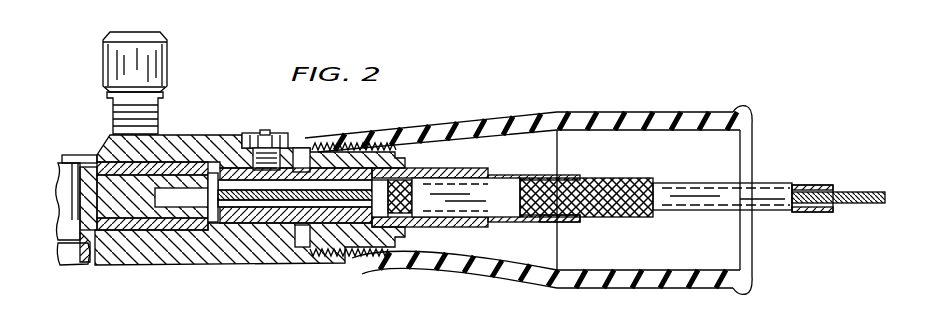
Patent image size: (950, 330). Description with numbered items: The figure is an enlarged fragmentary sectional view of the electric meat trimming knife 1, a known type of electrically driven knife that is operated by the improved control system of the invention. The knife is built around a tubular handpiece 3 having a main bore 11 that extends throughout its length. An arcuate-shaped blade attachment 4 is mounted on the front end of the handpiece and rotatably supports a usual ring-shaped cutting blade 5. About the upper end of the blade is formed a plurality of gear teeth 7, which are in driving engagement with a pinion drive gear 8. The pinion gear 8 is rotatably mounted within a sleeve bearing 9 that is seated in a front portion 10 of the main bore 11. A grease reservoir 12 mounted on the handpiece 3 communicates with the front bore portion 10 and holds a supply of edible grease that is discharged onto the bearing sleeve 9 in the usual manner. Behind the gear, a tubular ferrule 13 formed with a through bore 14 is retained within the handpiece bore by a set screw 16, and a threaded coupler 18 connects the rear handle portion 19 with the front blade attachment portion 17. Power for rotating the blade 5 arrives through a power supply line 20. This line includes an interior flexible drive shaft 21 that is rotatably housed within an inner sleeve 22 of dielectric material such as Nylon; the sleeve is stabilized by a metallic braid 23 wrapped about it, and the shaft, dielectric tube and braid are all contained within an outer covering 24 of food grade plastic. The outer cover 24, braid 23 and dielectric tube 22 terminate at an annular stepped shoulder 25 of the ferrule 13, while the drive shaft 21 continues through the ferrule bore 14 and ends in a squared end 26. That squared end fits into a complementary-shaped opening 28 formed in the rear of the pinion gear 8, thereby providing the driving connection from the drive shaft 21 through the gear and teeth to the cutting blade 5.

The electric meat trimming knife 1 is at (562, 98).
The tubular handpiece 3 is at (653, 104).
The arcuate-shaped blade attachment 4 is at (70, 155).
The ring-shaped cutting blade 5 is at (72, 263).
The gear teeth 7 is at (62, 233).
The pinion drive gear 8 is at (130, 212).
The sleeve bearing 9 is at (182, 160).
The front portion of main bore 10 is at (167, 232).
The main bore 11 is at (257, 218).
The grease reservoir 12 is at (160, 104).
The ferrule 13 is at (320, 176).
The through bore 14 is at (288, 208).
The set screw 16 is at (255, 133).
The front blade attachment portion 17 is at (214, 248).
The threaded coupler 18 is at (360, 148).
The rear handle portion 19 is at (585, 282).
The power supply line 20 is at (505, 163).
The flexible drive shaft 21 is at (861, 205).
The inner sleeve 22 is at (778, 185).
The metallic braid 23 is at (625, 219).
The outer covering 24 is at (553, 222).
The annular stepped shoulder 25 is at (365, 225).
The squared end 26 is at (207, 165).
The complementary-shaped opening 28 is at (157, 196).